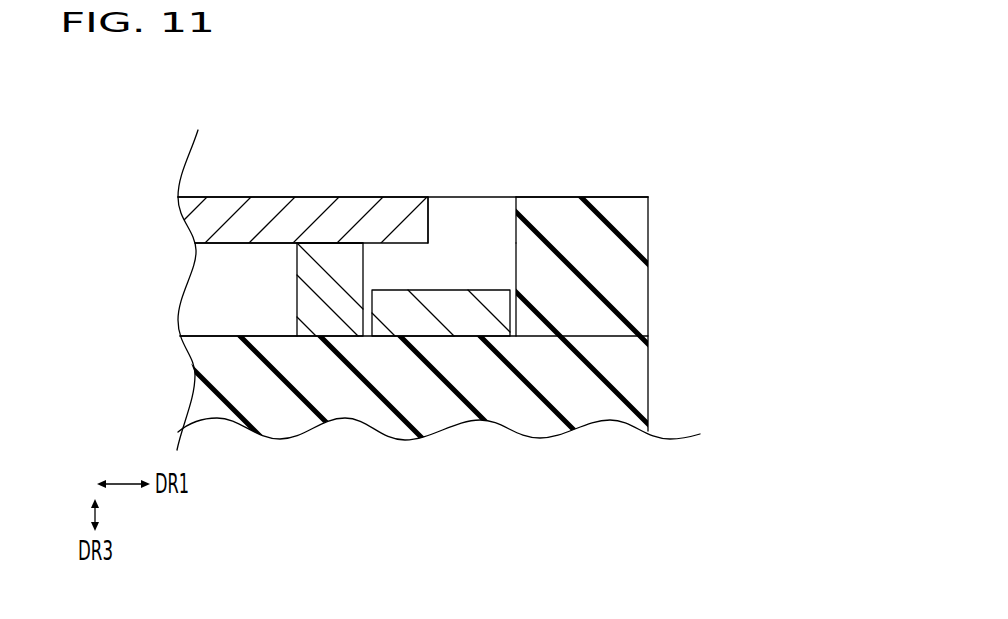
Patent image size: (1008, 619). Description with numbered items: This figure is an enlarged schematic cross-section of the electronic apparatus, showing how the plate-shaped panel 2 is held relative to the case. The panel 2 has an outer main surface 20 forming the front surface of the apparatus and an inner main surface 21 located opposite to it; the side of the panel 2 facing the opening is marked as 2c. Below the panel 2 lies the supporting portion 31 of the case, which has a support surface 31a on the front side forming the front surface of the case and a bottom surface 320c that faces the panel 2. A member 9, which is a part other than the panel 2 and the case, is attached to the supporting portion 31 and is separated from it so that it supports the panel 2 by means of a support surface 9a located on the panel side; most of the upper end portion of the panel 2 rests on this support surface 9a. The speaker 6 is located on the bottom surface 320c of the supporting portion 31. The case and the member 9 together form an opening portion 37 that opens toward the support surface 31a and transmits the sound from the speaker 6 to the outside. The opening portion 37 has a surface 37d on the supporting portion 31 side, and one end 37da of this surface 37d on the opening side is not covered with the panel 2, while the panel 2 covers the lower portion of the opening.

The panel 2 is at (217, 207).
The outer main surface 20 is at (263, 197).
The side surface of substrate 2c is at (429, 225).
The support surface 9a is at (327, 243).
The member 9 is at (305, 300).
The speaker 6 is at (393, 310).
The inner main surface 21 is at (228, 245).
The bottom surface 320c is at (258, 334).
The opening portion 37 is at (506, 224).
The one end of the surface 37da is at (517, 197).
The surface 37d is at (516, 267).
The supporting portion 31 is at (632, 308).
The support surface 31a is at (601, 197).